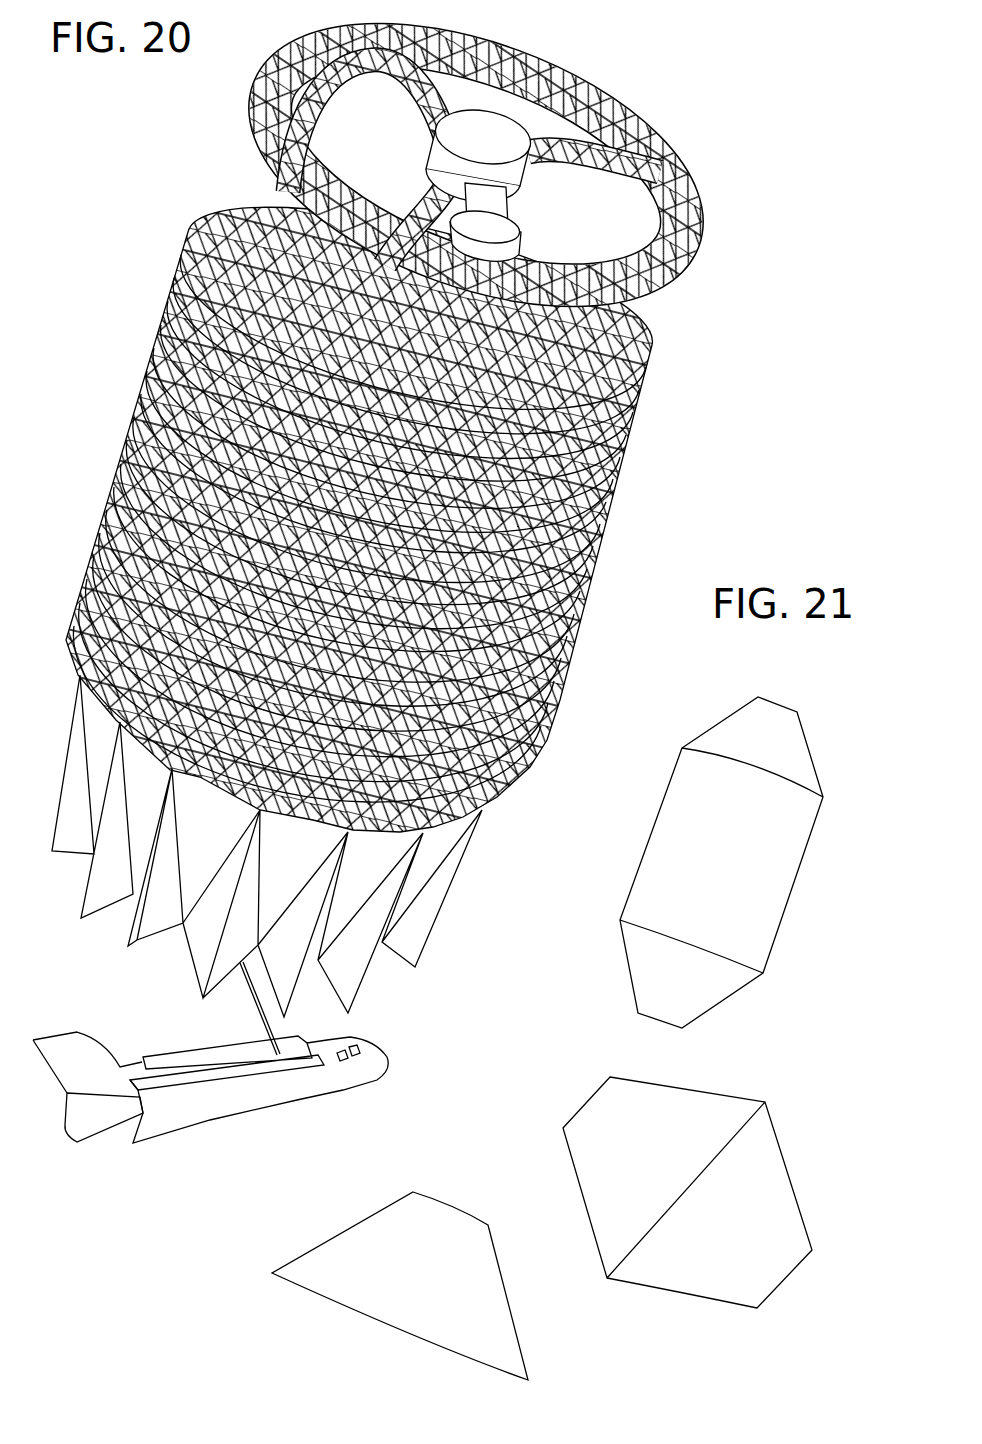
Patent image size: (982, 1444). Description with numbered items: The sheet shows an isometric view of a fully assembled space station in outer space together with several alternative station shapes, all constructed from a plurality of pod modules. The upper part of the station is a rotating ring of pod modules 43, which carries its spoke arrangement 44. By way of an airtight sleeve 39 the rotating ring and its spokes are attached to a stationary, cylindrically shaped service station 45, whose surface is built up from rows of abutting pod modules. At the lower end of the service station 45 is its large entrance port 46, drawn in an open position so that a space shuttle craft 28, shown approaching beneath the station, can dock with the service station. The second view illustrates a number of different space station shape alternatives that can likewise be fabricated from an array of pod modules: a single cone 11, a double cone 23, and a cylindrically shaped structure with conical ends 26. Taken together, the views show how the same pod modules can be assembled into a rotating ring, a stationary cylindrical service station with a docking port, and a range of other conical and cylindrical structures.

In FIG. 20, the service station 45 is at (178, 300).
In FIG. 20, the rotating ring of pod modules 43 is at (253, 170).
In FIG. 20, the spoke arrangement 44 is at (393, 117).
In FIG. 20, the airtight sleeve 39 is at (497, 203).
In FIG. 20, the entrance port 46 is at (140, 945).
In FIG. 20, the space shuttle craft 28 is at (365, 1067).
In FIG. 21, the cylindrically shaped structure with conical ends 26 is at (721, 849).
In FIG. 21, the double cone 23 is at (687, 1179).
In FIG. 21, the single cone 11 is at (400, 1276).